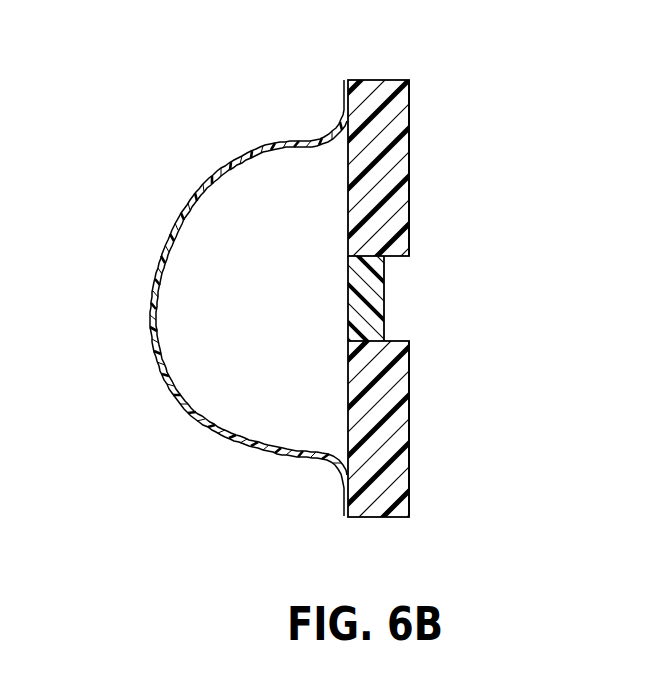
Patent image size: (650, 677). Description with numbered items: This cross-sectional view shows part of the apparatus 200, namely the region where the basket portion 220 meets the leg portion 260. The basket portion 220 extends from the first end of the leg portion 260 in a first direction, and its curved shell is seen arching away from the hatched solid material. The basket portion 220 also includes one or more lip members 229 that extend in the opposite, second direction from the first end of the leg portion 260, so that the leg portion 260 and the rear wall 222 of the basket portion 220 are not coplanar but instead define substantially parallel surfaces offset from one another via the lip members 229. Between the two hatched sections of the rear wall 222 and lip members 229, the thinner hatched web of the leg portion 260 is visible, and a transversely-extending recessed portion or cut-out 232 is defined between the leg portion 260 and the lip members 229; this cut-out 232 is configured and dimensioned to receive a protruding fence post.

The apparatus 200 is at (174, 116).
The basket portion 220 is at (150, 288).
The rear wall 222 is at (375, 90).
The lip member 229 is at (409, 146).
The cut-out 232 is at (402, 274).
The leg portion 260 is at (385, 305).